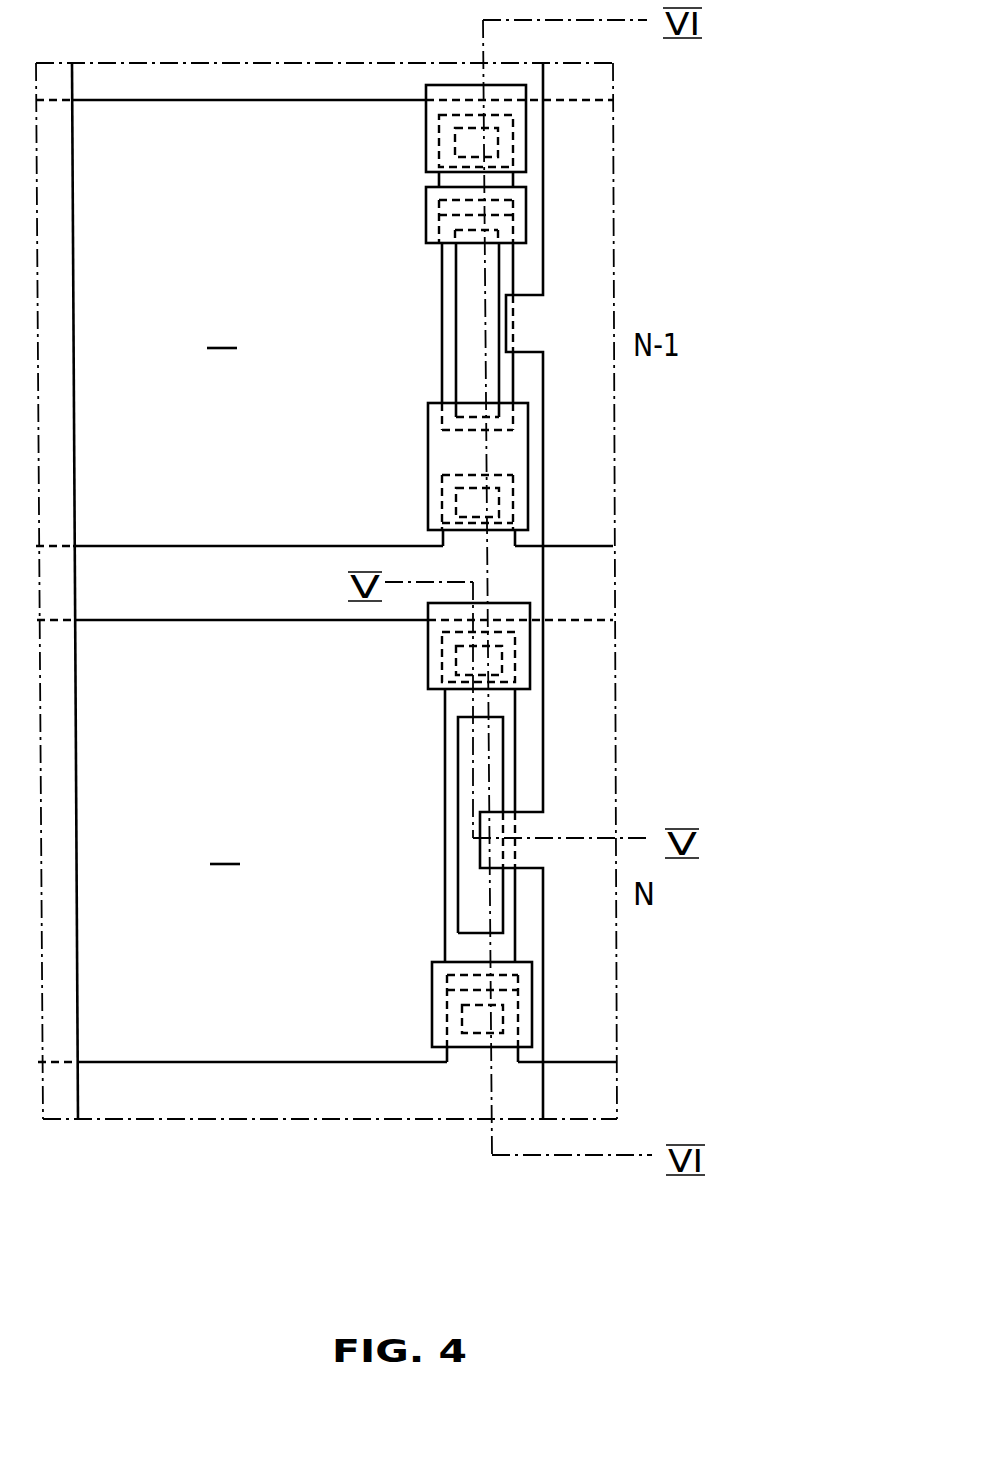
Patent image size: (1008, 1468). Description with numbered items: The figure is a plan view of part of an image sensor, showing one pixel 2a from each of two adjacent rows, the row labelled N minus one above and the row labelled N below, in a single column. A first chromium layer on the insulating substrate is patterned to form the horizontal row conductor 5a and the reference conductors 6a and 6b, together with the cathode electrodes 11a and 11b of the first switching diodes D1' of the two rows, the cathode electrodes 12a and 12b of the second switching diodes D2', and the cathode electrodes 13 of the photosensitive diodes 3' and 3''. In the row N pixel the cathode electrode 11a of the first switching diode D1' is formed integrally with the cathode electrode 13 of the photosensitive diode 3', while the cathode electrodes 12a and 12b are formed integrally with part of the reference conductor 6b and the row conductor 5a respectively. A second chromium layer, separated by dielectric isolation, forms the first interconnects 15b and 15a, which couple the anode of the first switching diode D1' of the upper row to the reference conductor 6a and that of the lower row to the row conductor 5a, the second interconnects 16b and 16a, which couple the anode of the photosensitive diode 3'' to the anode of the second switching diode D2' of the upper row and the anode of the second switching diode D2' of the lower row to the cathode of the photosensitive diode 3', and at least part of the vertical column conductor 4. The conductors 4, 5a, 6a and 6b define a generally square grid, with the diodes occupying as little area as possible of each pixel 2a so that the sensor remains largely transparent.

The pixel 2a is at (223, 589).
The photosensitive diode 3' is at (436, 827).
The photosensitive diode 3'' is at (429, 330).
The column conductor 4 is at (563, 213).
The row conductor 5a is at (587, 582).
The reference conductor 6a is at (198, 87).
The reference conductor 6b is at (533, 1083).
The cathode electrode 11a is at (510, 703).
The cathode electrode 11b is at (503, 180).
The cathode electrode 12a is at (445, 1058).
The cathode electrode 12b is at (437, 543).
The cathode electrode 13 is at (506, 265).
The first interconnect 15a is at (430, 653).
The first interconnect 15b is at (433, 135).
The second interconnect 16a is at (440, 987).
The second interconnect 16b is at (506, 452).
The first switching diode D1' is at (587, 384).
The second switching diode D2' is at (588, 744).